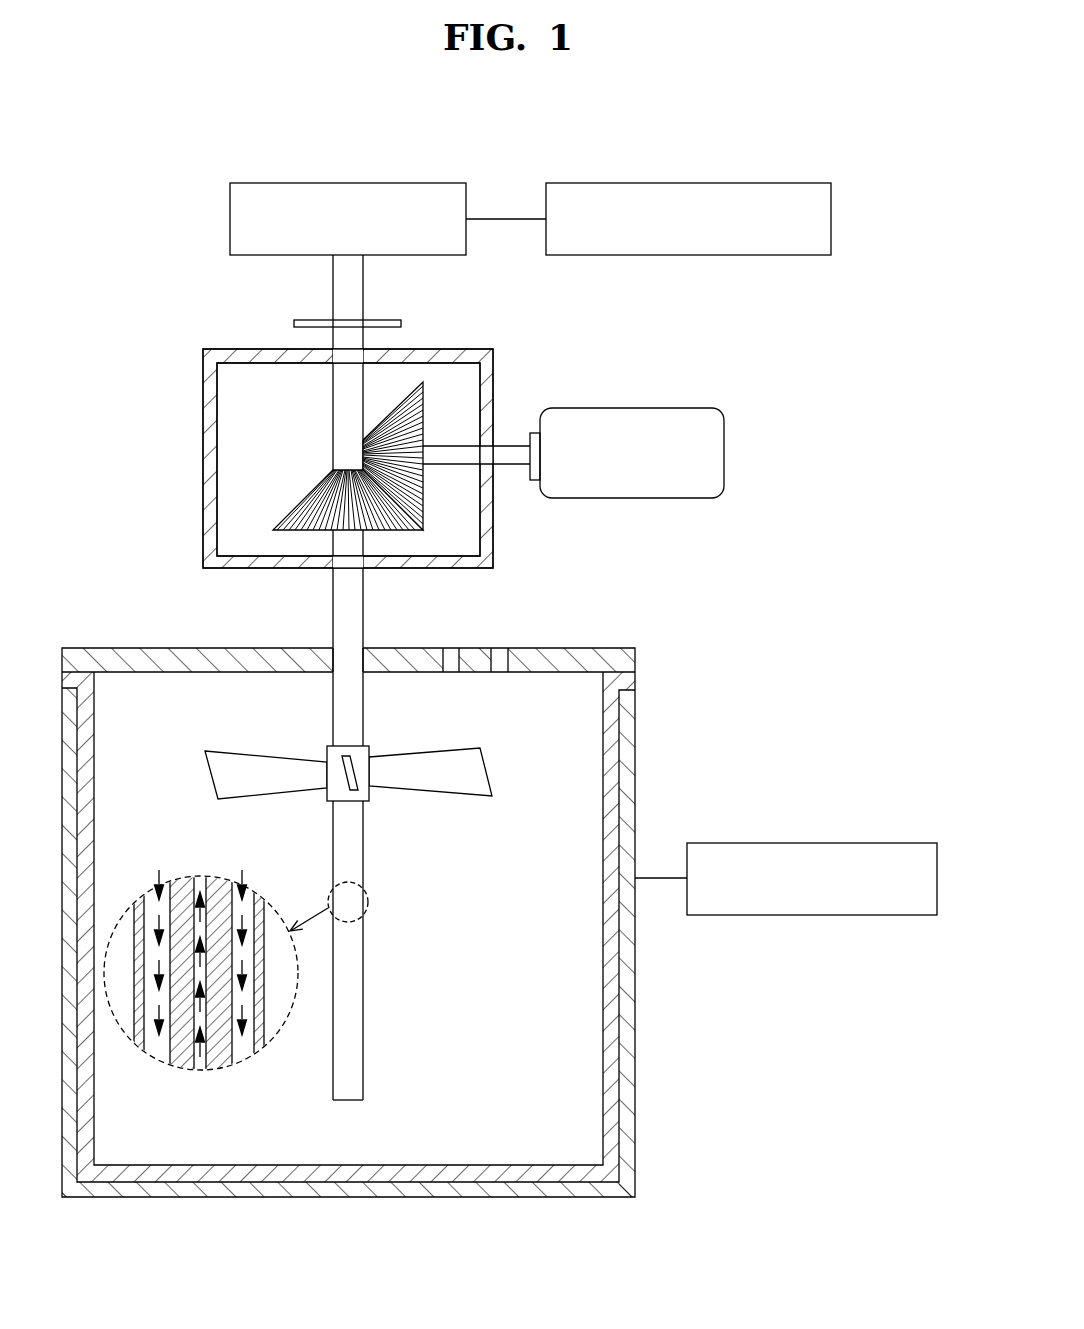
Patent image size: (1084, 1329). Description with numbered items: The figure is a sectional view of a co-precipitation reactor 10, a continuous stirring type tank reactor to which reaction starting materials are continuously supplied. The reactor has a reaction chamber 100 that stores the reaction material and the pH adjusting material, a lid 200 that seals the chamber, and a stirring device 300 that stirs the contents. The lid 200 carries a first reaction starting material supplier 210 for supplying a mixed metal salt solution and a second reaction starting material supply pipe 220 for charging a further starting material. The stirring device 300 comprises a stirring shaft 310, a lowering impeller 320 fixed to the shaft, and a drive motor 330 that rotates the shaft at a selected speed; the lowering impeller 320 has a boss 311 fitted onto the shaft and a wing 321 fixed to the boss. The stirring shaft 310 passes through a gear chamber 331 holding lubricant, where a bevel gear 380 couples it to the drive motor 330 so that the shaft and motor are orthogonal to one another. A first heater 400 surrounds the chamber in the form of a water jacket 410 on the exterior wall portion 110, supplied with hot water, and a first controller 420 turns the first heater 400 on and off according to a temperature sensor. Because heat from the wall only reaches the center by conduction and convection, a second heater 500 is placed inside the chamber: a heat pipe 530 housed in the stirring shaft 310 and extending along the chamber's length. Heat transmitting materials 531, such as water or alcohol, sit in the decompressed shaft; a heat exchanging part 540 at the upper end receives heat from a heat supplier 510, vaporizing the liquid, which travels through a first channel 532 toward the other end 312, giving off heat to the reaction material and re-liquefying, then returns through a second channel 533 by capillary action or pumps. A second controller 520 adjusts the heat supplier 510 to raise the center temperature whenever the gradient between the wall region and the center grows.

The co-precipitation reactor 10 is at (70, 197).
The reaction chamber 100 is at (657, 670).
The exterior wall portion 110 is at (610, 731).
The lid 200 is at (580, 662).
The first reaction starting material supplier 210 is at (452, 648).
The second reaction starting material supply pipe 220 is at (498, 648).
The stirring device 300 is at (382, 790).
The stirring shaft 310 is at (333, 698).
The boss 311 is at (342, 790).
The other end of the stirring shaft 312 is at (363, 1087).
The lowering impeller 320 is at (437, 747).
The wing 321 is at (478, 770).
The drive motor 330 is at (632, 408).
The gear chamber 331 is at (203, 440).
The bevel gear 380 is at (425, 425).
The first heater 400 is at (643, 795).
The water jacket 410 is at (628, 819).
The first controller 420 is at (849, 843).
The second heater 500 is at (298, 618).
The heat supplier 510 is at (348, 183).
The second controller 520 is at (692, 183).
The heat pipe 530 is at (353, 625).
The heat transmitting materials 531 is at (158, 890).
The first channel 532 is at (160, 1052).
The second channel 533 is at (200, 878).
The heat exchanging part 540 is at (393, 319).